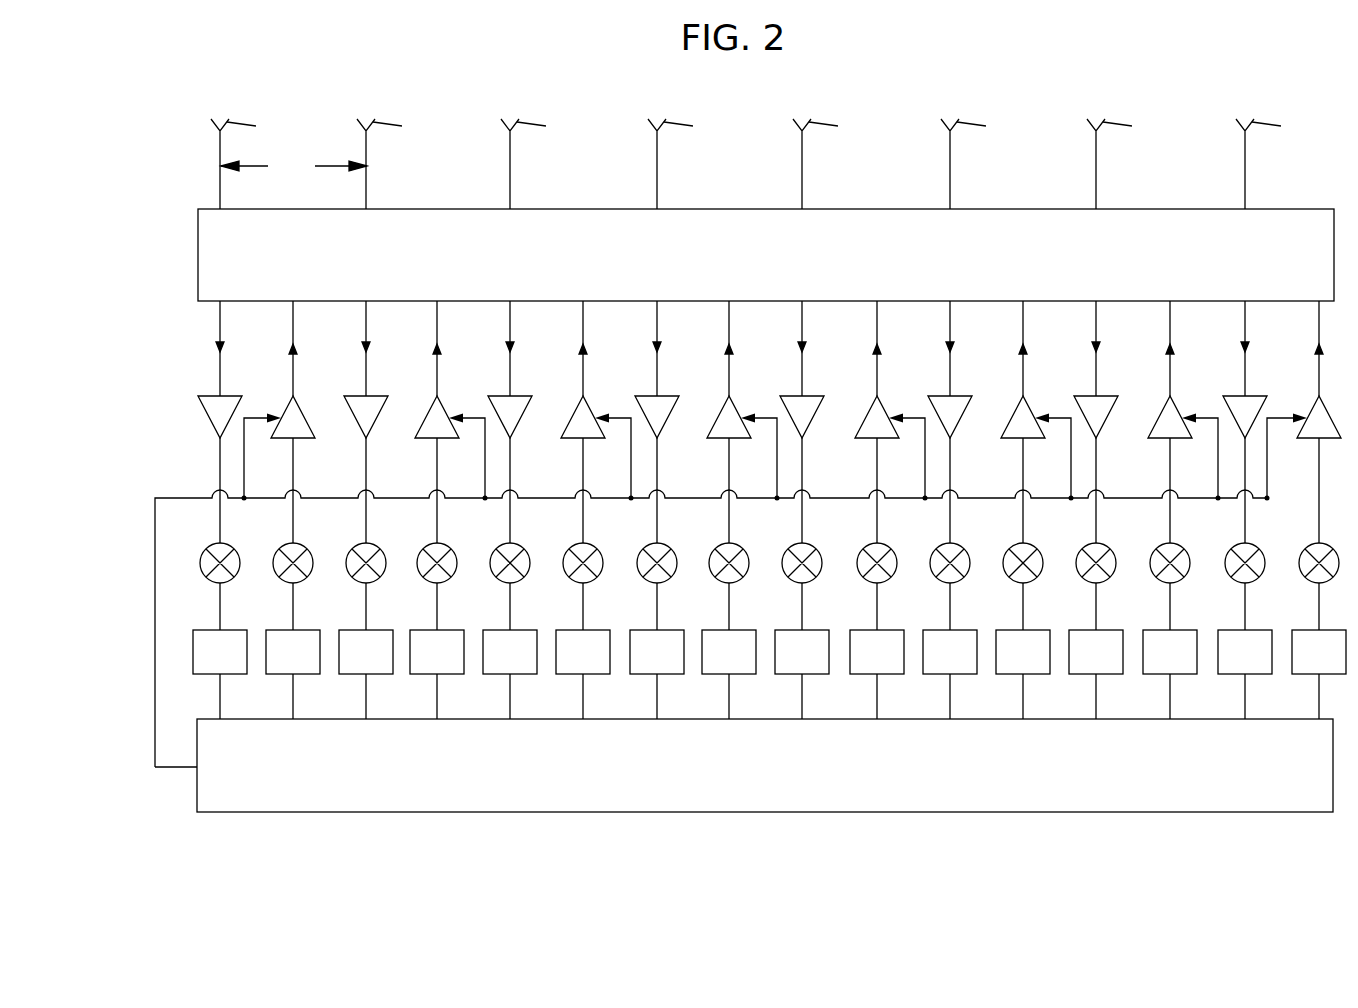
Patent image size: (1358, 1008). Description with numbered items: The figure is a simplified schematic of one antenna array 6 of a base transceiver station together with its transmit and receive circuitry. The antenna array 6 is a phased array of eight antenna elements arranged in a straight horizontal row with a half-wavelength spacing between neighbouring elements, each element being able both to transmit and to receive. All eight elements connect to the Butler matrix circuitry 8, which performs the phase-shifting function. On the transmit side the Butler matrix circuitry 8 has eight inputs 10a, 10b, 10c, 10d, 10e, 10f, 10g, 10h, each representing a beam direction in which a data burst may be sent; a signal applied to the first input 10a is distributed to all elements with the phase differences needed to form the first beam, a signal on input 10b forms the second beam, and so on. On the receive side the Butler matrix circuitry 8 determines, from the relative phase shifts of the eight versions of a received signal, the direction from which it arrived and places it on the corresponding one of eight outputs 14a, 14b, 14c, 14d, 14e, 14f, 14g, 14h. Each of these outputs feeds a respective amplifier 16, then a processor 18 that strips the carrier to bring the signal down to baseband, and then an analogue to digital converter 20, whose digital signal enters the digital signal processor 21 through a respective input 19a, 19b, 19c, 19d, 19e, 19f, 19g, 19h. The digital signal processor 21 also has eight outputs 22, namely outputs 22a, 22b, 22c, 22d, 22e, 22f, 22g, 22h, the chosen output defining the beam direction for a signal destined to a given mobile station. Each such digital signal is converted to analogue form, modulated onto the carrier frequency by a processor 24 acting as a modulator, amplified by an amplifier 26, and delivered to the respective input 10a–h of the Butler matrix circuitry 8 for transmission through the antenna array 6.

The antenna array 6 is at (1180, 104).
The Butler matrix circuitry 8 is at (1273, 238).
The first input 10a is at (293, 320).
The input 10b is at (437, 320).
The input 10c is at (583, 320).
The input 10d is at (729, 320).
The input 10e is at (877, 320).
The input 10f is at (1023, 320).
The input 10g is at (1170, 320).
The input 10h is at (1319, 320).
The output 14a is at (220, 320).
The output 14b is at (366, 320).
The output 14c is at (510, 320).
The output 14d is at (657, 320).
The output 14e is at (802, 320).
The output 14f is at (950, 320).
The output 14g is at (1096, 320).
The output 14h is at (1245, 320).
The amplifier 16 is at (1227, 395).
The amplifier 26 is at (1313, 400).
The processor 18 is at (1236, 548).
The processor 24 is at (1310, 548).
The analogue to digital converter 20 is at (1228, 628).
The outputs of digital signal processor 22 is at (1309, 628).
The input 19a is at (220, 699).
The input 19b is at (366, 699).
The input 19c is at (510, 699).
The input 19d is at (657, 699).
The input 19e is at (802, 699).
The input 19f is at (950, 699).
The input 19g is at (1096, 699).
The input 19h is at (1245, 699).
The output 22a is at (293, 699).
The output 22b is at (437, 699).
The output 22c is at (583, 699).
The output 22d is at (729, 699).
The output 22e is at (877, 699).
The output 22f is at (1023, 699).
The output 22g is at (1170, 699).
The output 22h is at (1319, 699).
The digital signal processor 21 is at (258, 790).